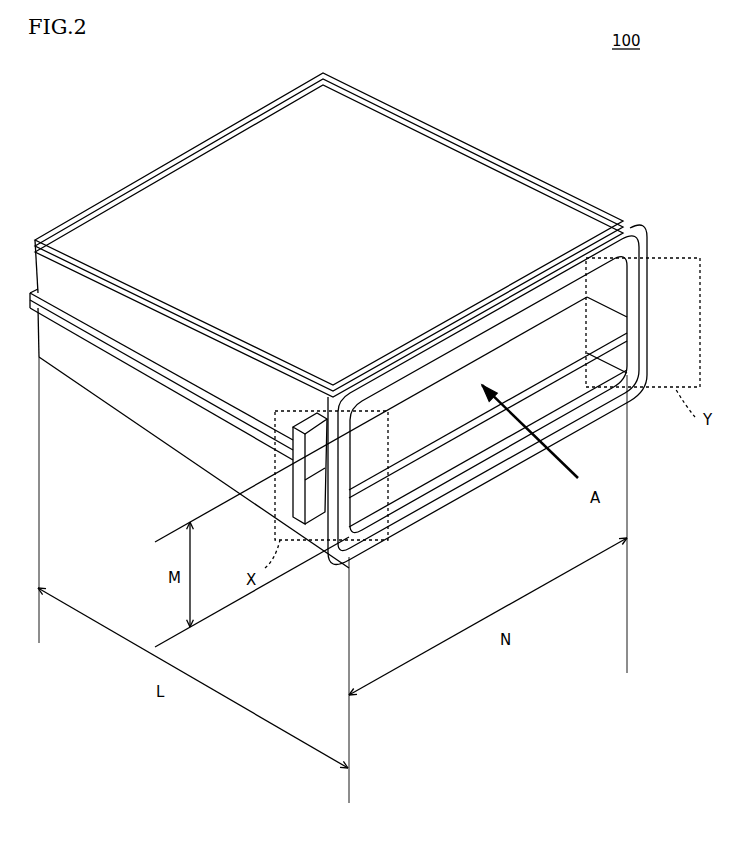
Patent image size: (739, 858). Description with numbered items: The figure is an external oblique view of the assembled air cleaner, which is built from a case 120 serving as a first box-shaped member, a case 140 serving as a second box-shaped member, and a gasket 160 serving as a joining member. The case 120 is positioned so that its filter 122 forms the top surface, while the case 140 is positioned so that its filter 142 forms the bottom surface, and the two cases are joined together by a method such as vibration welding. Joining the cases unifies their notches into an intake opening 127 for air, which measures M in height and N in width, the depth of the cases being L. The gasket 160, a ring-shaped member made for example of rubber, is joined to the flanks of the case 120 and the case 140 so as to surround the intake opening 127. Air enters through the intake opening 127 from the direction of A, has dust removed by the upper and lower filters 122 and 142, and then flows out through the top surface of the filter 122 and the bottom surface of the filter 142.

The case 120 is at (484, 133).
The filter 122 is at (488, 193).
The intake opening 127 is at (627, 397).
The case 140 is at (95, 408).
The filter 142 is at (210, 462).
The gasket 160 is at (648, 278).